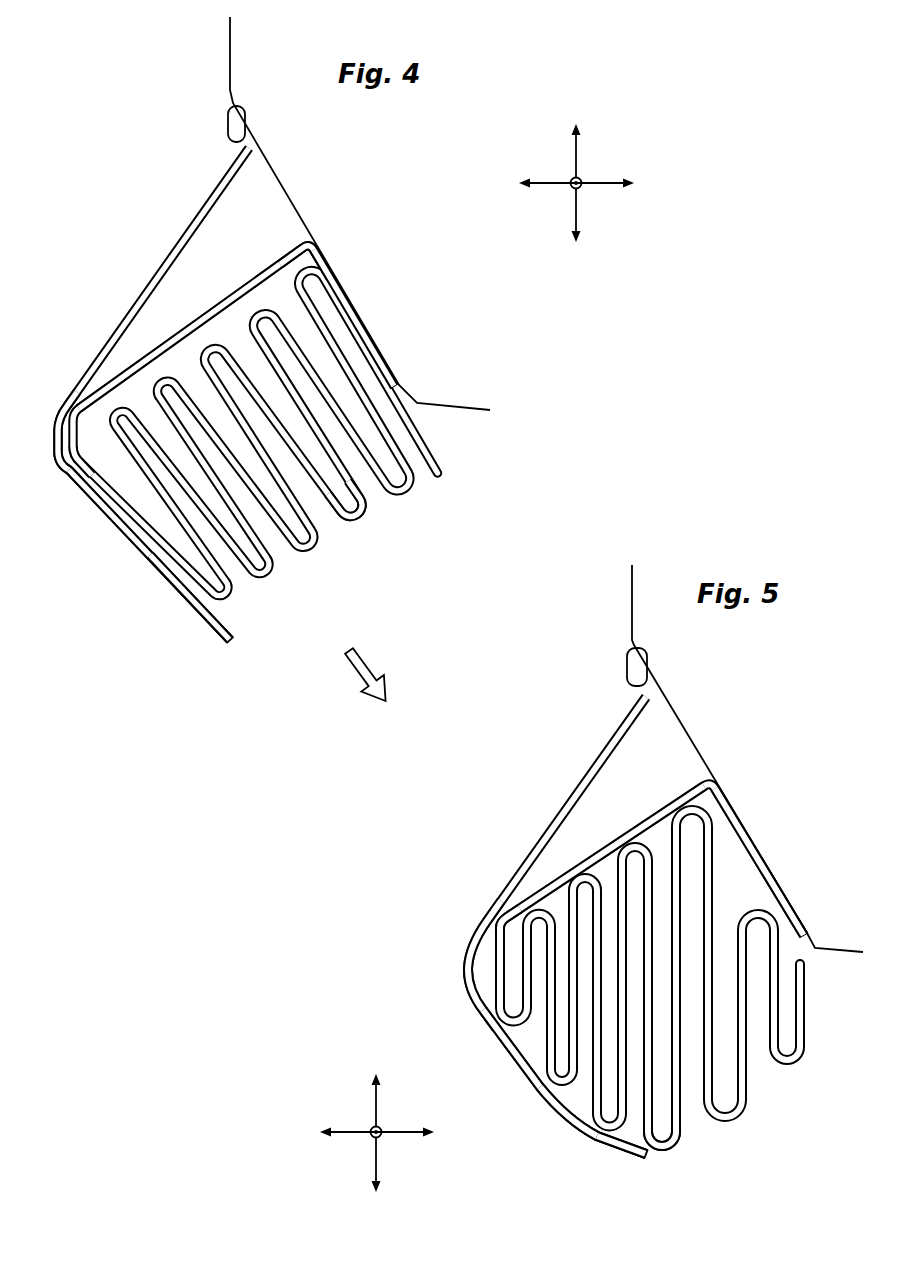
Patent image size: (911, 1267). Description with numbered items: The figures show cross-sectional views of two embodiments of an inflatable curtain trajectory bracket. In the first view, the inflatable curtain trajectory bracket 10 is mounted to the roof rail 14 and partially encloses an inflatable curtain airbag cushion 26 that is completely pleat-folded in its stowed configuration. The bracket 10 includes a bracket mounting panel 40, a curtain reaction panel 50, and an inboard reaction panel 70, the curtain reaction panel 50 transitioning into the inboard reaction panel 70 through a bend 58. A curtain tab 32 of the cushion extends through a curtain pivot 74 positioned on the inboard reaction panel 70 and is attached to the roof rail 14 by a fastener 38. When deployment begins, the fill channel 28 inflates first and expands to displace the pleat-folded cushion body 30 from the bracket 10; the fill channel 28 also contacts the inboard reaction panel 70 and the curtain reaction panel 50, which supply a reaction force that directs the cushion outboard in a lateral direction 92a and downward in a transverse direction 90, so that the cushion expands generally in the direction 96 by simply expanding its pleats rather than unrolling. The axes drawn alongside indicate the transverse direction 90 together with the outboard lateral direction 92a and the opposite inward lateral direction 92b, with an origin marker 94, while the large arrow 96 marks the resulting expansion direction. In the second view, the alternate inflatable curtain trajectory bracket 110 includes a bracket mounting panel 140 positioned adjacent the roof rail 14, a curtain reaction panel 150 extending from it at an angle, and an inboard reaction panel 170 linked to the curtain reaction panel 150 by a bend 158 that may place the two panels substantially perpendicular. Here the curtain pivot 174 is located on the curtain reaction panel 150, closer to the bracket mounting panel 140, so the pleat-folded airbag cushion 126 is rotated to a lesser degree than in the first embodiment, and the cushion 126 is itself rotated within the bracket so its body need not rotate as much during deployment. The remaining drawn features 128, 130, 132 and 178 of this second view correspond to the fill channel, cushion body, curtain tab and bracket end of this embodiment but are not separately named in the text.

In FIG. 4, the inflatable curtain trajectory bracket 10 is at (272, 349).
In FIG. 4, the roof rail 14 is at (228, 58).
In FIG. 5, the roof rail 14 is at (631, 601).
In FIG. 4, the inflatable curtain airbag cushion 26 is at (333, 572).
In FIG. 4, the fill channel 28 is at (157, 544).
In FIG. 4, the cushion body 30 is at (372, 520).
In FIG. 4, the curtain tab 32 is at (163, 268).
In FIG. 4, the fastener 38 is at (226, 128).
In FIG. 5, the fastener 38 is at (628, 676).
In FIG. 4, the bracket mounting panel 40 is at (345, 290).
In FIG. 4, the curtain reaction panel 50 is at (250, 266).
In FIG. 4, the bend 58 is at (60, 410).
In FIG. 4, the inboard reaction panel 70 is at (163, 569).
In FIG. 4, the curtain pivot 74 is at (90, 468).
In FIG. 4, the transverse direction 90 is at (580, 141).
In FIG. 5, the transverse direction 90 is at (381, 1096).
In FIG. 4, the lateral direction 92a is at (604, 186).
In FIG. 5, the lateral direction 92a is at (405, 1136).
In FIG. 4, the lateral direction 92b is at (543, 190).
In FIG. 5, the lateral direction 92b is at (343, 1140).
In FIG. 4, the axis reference point 94 is at (570, 181).
In FIG. 5, the axis reference point 94 is at (370, 1131).
In FIG. 4, the direction 96 is at (358, 672).
In FIG. 5, the inflatable curtain trajectory bracket 110 is at (601, 887).
In FIG. 5, the airbag cushion 126 is at (775, 1147).
In FIG. 5, the lower leg of bracket 128 is at (497, 1040).
In FIG. 5, the tube bend 130 is at (688, 1120).
In FIG. 5, the upper leg of bracket 132 is at (560, 818).
In FIG. 5, the bracket mounting panel 140 is at (742, 833).
In FIG. 5, the curtain reaction panel 150 is at (640, 822).
In FIG. 5, the bend 158 is at (461, 968).
In FIG. 5, the inboard reaction panel 170 is at (537, 1093).
In FIG. 5, the curtain pivot 174 is at (496, 912).
In FIG. 5, the bracket end 178 is at (588, 1138).